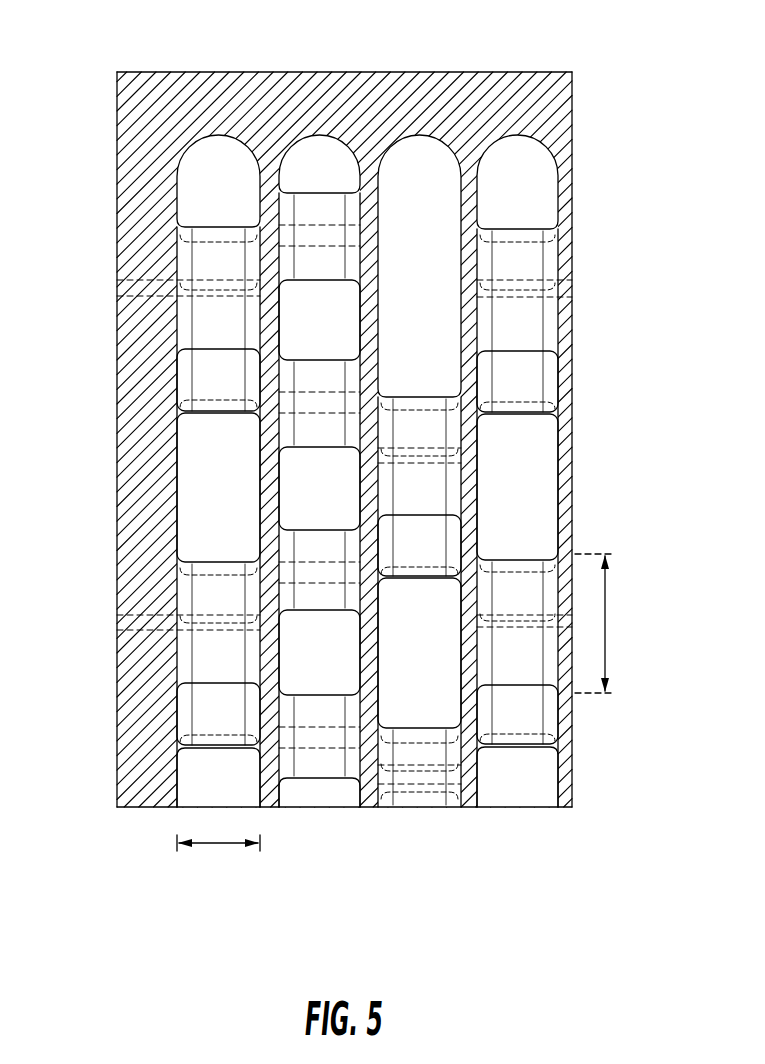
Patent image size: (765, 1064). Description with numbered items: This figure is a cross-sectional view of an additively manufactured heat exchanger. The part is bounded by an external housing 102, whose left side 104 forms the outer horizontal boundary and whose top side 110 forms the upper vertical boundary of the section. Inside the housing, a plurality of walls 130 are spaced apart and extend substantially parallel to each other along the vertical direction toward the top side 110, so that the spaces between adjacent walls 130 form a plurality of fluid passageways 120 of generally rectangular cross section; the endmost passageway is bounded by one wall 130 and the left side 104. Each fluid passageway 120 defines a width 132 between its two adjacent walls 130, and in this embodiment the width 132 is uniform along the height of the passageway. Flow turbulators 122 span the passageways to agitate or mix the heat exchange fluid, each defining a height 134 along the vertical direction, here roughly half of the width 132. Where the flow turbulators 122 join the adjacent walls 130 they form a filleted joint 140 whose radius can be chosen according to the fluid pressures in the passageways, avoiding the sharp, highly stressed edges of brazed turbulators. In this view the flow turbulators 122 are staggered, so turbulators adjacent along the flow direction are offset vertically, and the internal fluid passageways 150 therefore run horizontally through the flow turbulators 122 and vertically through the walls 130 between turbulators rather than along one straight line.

The external housing 102 is at (138, 72).
The left side 104 is at (116, 115).
The top side 110 is at (171, 71).
The fluid passageway 120 is at (519, 164).
The flow turbulator 122 is at (533, 386).
The wall 130 is at (272, 807).
The width 132 is at (216, 843).
The height 134 is at (610, 632).
The filleted joint 140 is at (186, 413).
The internal fluid passageway 150 is at (117, 312).